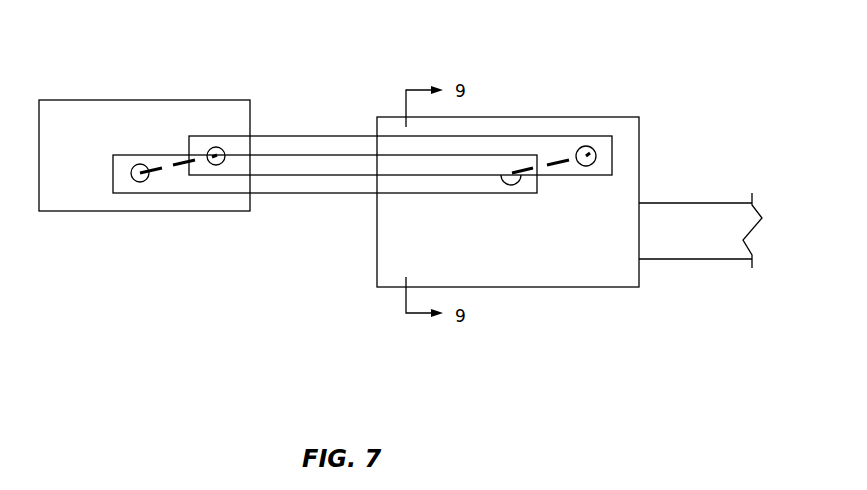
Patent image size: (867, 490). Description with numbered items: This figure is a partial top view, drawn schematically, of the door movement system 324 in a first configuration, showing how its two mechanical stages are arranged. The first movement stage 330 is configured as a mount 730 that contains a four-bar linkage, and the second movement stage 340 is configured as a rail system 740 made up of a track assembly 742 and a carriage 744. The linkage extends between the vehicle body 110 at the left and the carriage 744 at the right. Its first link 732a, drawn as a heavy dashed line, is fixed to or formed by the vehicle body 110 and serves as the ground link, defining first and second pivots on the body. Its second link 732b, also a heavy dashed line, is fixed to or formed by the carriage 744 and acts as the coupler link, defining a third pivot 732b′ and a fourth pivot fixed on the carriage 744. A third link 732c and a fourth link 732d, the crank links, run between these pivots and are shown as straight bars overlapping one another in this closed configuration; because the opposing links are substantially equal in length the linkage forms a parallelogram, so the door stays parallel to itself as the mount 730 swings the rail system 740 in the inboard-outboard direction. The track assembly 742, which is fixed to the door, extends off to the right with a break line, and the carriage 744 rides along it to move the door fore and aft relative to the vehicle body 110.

The vehicle body 110 is at (90, 100).
The first movement stage 330 is at (153, 284).
The mount 730 is at (149, 186).
The second movement stage 340 is at (656, 323).
The rail system 740 is at (571, 277).
The door movement system 324 is at (602, 362).
The track assembly 742 is at (687, 259).
The carriage 744 is at (525, 287).
The first link 732a is at (177, 165).
The second link 732b is at (550, 163).
The third pivot 732b′ is at (511, 173).
The third link 732c is at (290, 193).
The fourth link 732d is at (333, 175).